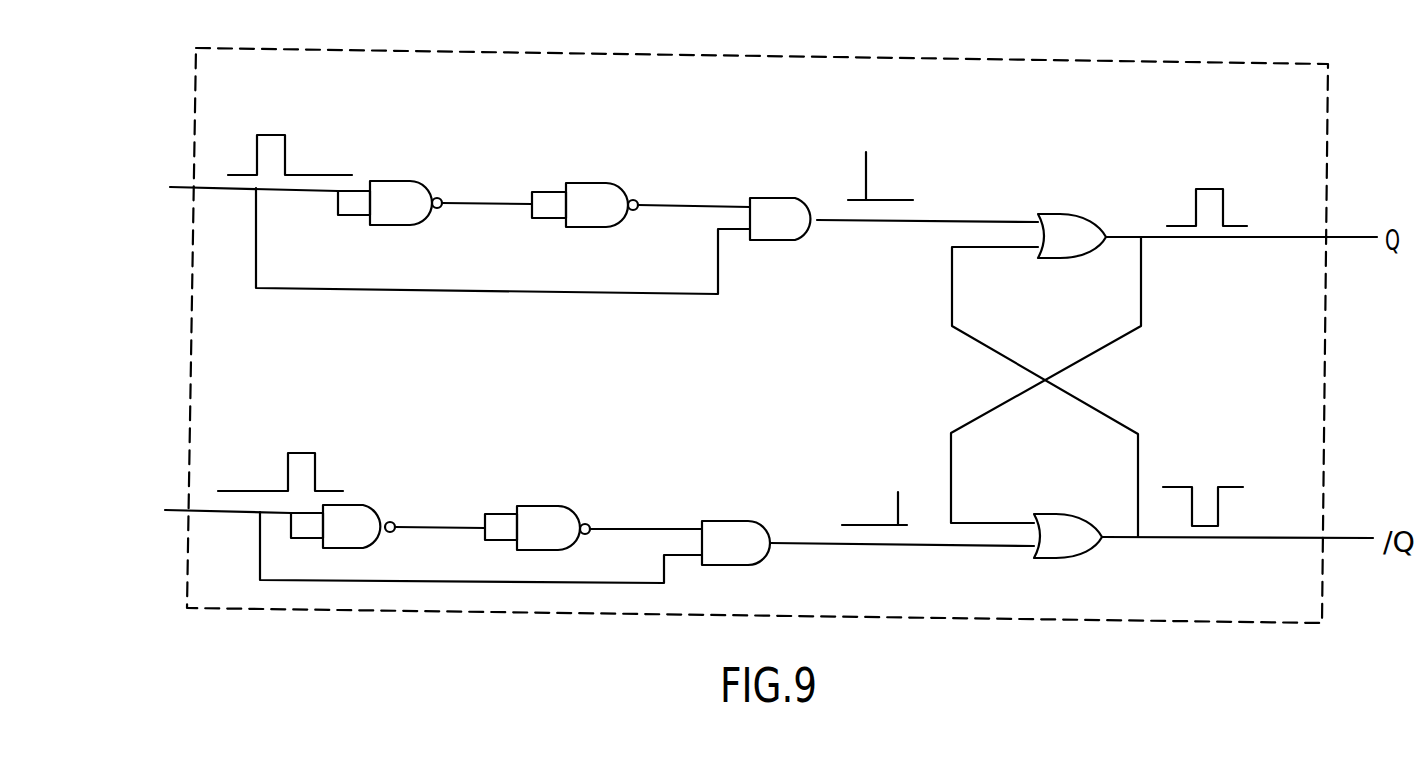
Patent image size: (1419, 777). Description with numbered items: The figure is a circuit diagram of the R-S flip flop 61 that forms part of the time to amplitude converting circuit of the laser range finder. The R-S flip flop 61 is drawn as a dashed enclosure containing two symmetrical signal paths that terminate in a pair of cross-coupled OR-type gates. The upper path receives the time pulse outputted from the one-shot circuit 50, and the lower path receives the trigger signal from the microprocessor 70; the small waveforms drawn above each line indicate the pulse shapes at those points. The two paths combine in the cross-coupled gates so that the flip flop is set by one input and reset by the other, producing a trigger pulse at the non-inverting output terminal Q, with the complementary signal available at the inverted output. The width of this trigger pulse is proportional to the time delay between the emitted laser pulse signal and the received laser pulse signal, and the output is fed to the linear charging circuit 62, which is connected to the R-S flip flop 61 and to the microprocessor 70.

The one-shot circuit 50 is at (237, 181).
The microprocessor 70 is at (212, 510).
The R-S flip flop 61 is at (650, 53).
The linear charging circuit 62 is at (1255, 265).